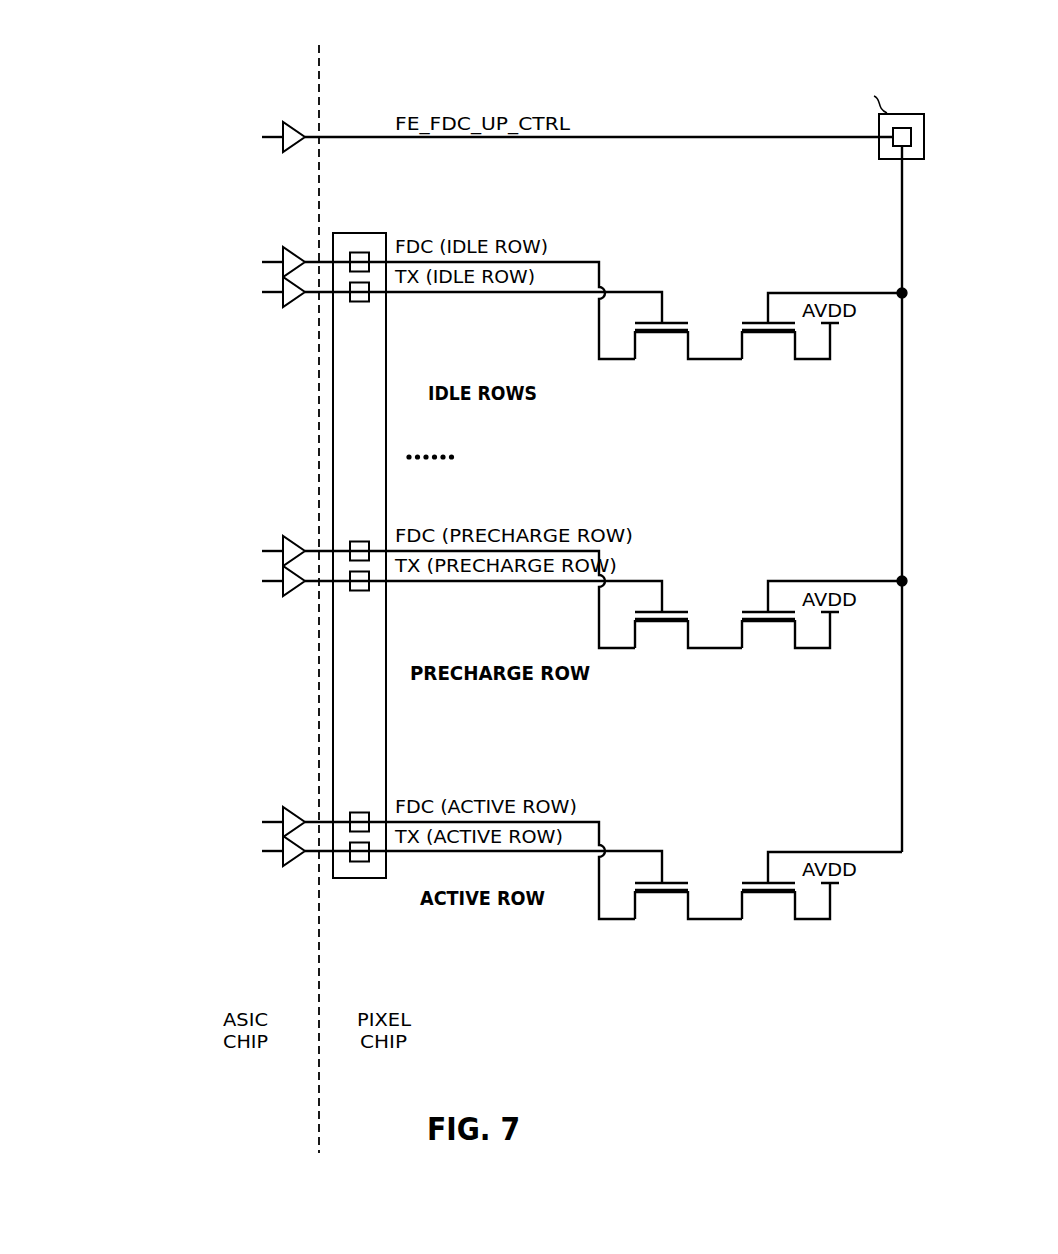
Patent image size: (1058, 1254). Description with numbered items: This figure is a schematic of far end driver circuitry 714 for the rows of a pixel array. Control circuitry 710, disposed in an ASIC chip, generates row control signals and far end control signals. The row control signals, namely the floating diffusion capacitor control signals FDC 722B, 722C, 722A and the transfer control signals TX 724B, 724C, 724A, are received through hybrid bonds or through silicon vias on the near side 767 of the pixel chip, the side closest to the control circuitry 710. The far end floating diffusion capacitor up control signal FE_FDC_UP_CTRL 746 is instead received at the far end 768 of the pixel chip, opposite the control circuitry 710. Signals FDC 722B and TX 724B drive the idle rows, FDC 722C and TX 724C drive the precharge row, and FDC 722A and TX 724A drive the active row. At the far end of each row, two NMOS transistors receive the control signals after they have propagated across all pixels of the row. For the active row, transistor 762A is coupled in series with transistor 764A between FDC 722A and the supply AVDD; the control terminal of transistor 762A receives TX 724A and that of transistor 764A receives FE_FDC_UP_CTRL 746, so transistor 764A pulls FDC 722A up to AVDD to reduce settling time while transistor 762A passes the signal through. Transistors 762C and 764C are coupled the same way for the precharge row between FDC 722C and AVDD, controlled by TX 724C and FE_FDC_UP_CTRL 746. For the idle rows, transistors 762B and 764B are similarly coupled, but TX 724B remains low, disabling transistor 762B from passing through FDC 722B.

The control circuitry 710 is at (237, 982).
The far end driver circuitry 714 is at (899, 49).
The far end floating diffusion capacitor up control signal 746 is at (78, 137).
The far end 768 is at (878, 131).
The near side 767 is at (388, 869).
The floating diffusion capacitor control signal FDC 722B is at (214, 262).
The transfer control signal TX 724B is at (214, 292).
The floating diffusion capacitor control signal FDC 722C is at (213, 551).
The transfer control signal TX 724C is at (213, 581).
The floating diffusion capacitor control signal FDC 722A is at (213, 822).
The transfer control signal TX 724A is at (213, 851).
The transistor 762B is at (657, 340).
The transistor 764B is at (764, 340).
The transistor 762C is at (657, 629).
The transistor 764C is at (764, 629).
The transistor 762A is at (657, 900).
The transistor 764A is at (764, 900).